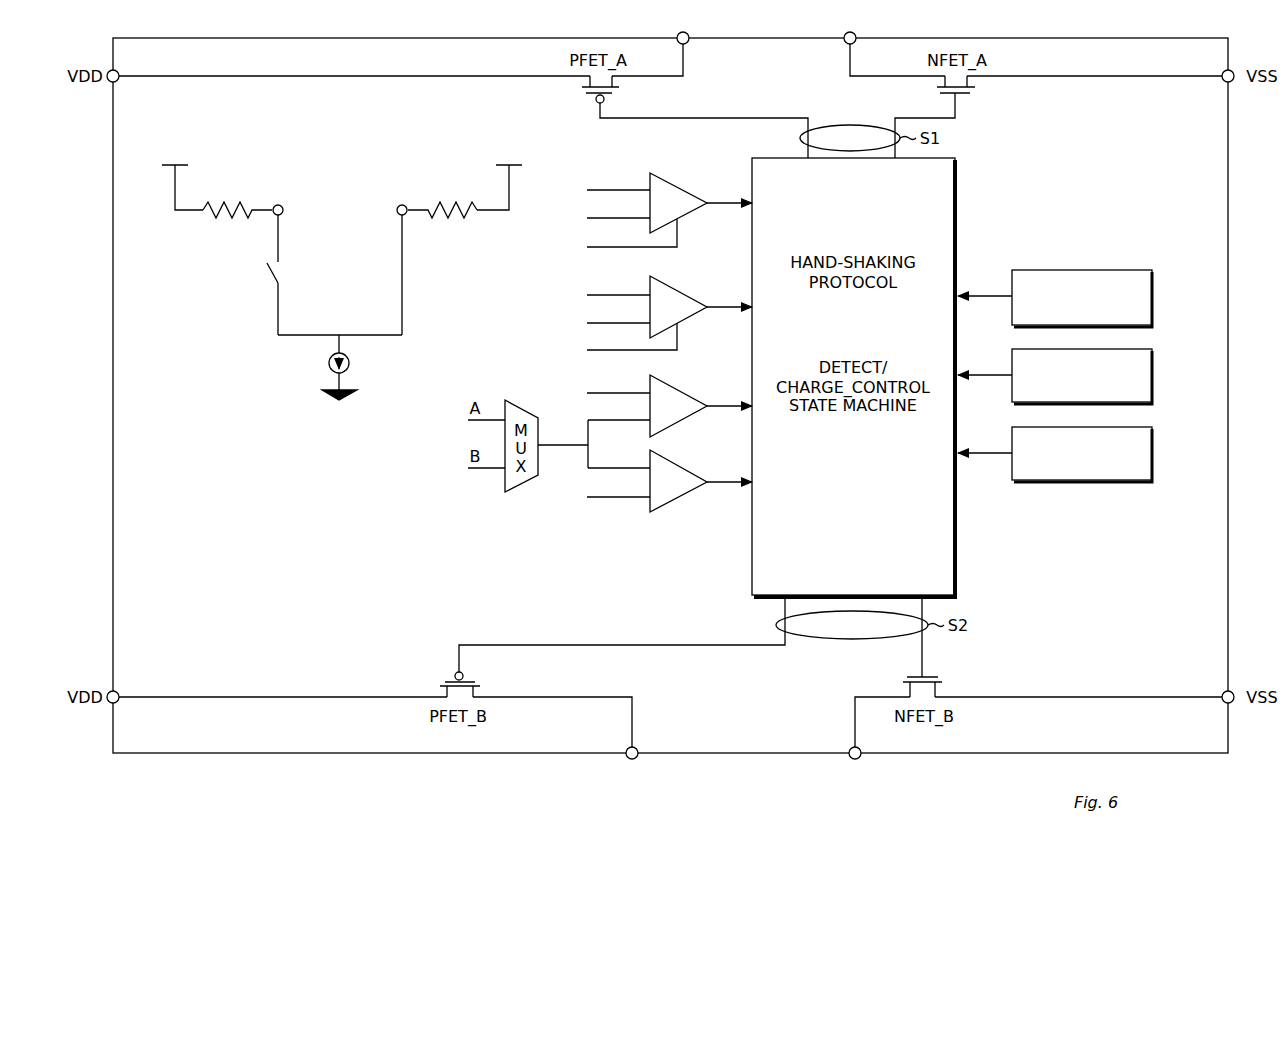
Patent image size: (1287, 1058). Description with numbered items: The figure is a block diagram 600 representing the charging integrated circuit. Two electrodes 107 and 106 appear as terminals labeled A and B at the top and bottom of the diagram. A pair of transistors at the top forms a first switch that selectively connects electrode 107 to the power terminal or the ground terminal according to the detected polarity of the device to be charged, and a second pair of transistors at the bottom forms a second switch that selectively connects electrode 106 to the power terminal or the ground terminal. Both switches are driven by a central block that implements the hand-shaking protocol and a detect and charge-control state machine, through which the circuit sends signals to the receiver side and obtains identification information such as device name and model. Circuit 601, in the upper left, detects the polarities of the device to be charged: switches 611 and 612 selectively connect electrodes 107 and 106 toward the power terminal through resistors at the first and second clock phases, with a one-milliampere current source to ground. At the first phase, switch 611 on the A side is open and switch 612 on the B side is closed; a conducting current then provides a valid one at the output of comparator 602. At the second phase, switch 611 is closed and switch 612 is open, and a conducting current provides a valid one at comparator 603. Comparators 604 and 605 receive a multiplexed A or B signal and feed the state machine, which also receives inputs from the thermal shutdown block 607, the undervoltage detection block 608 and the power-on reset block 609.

The block diagram 600 is at (1228, 544).
The circuit 601 is at (338, 273).
The comparator 602 is at (672, 182).
The comparator 603 is at (672, 285).
The comparator 604 is at (672, 384).
The comparator 605 is at (672, 459).
The thermal shutdown block 607 is at (1152, 296).
The UV_DET block 608 is at (1152, 375).
The POR block 609 is at (1152, 453).
The switch 611 is at (281, 270).
The switch 612 is at (402, 275).
The electrode 107 is at (678, 30).
The electrode 106 is at (638, 758).